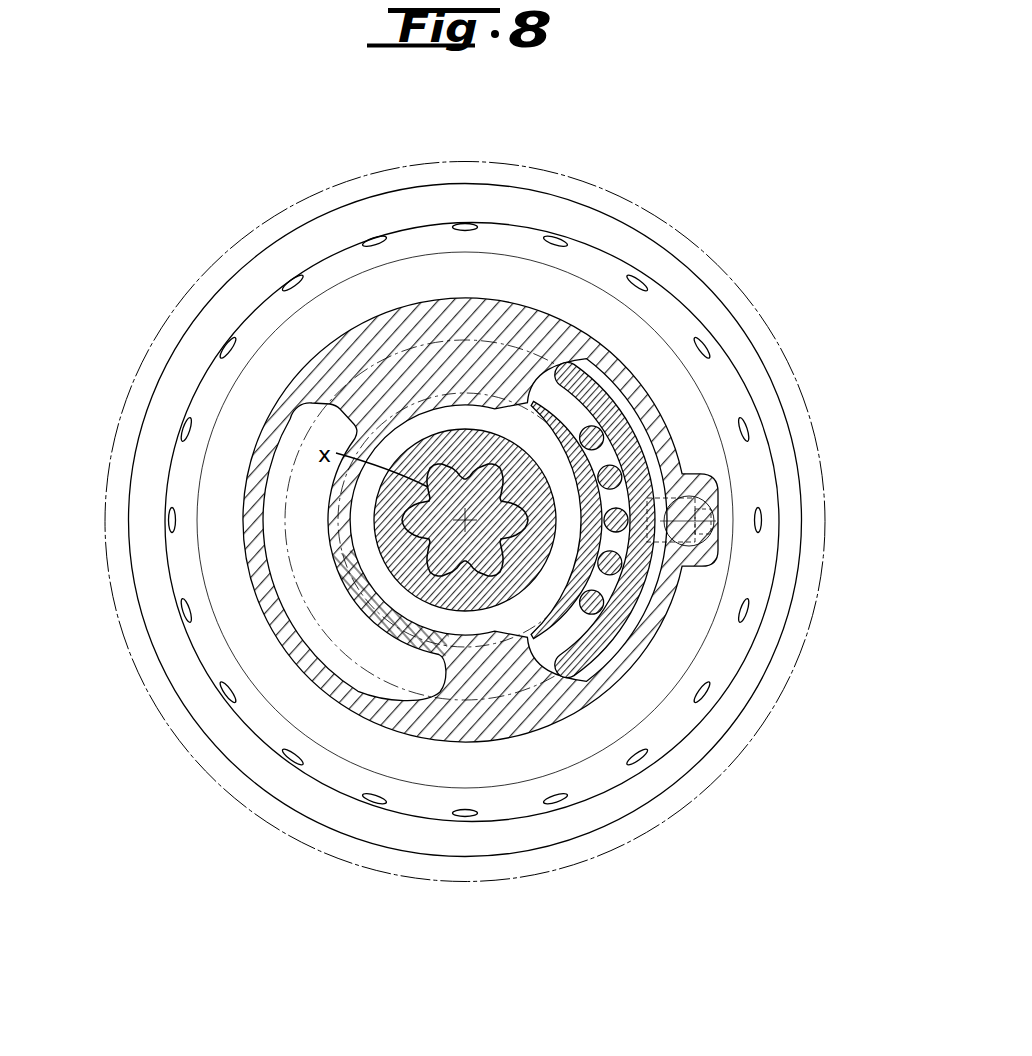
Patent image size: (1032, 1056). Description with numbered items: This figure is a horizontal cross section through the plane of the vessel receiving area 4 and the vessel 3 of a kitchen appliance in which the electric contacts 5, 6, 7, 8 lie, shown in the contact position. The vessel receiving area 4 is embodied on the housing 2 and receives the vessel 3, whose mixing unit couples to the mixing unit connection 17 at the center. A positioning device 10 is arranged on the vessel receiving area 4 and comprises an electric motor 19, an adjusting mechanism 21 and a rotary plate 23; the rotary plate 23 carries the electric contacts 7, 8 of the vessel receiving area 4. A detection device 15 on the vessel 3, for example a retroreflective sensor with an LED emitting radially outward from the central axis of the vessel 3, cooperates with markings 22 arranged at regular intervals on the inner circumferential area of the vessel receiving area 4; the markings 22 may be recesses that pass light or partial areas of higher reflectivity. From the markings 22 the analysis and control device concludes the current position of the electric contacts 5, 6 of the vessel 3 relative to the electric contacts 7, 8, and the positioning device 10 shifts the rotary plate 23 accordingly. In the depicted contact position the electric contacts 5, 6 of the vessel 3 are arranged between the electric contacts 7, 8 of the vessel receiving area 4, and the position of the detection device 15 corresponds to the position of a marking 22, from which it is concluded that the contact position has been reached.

The housing 2 is at (280, 227).
The vessel 3 is at (330, 367).
The vessel receiving area 4 is at (220, 435).
The electric contact 5 is at (627, 548).
The electric contact 6 is at (590, 439).
The electric contact 7 is at (553, 622).
The electric contact 8 is at (598, 402).
The positioning device 10 is at (716, 441).
The detection device 15 is at (721, 520).
The mixing unit connection 17 is at (447, 483).
The electric motor 19 is at (714, 541).
The adjusting mechanism 21 is at (700, 547).
The marking 22 is at (643, 281).
The rotary plate 23 is at (310, 610).